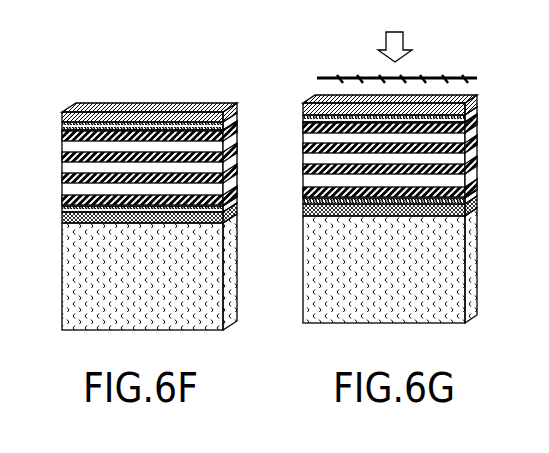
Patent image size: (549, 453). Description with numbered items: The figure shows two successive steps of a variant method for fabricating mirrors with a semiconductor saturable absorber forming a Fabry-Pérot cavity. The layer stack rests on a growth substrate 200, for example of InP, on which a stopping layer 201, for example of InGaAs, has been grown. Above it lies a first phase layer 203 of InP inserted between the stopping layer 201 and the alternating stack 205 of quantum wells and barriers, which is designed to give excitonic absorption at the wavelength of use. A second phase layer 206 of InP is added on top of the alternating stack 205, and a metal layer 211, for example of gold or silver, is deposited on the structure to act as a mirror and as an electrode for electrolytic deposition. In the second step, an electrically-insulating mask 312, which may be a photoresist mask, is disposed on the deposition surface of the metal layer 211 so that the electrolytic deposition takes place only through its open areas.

In FIG. 6F, the growth substrate 200 is at (60, 223).
In FIG. 6G, the growth substrate 200 is at (302, 216).
In FIG. 6F, the stopping layer 201 is at (237, 216).
In FIG. 6G, the stopping layer 201 is at (477, 211).
In FIG. 6F, the first phase layer 203 is at (62, 208).
In FIG. 6G, the first phase layer 203 is at (478, 203).
In FIG. 6F, the alternating stack of quantum wells and barriers 205 is at (238, 195).
In FIG. 6G, the alternating stack of quantum wells and barriers 205 is at (478, 190).
In FIG. 6F, the second phase layer 206 is at (238, 122).
In FIG. 6G, the second phase layer 206 is at (478, 117).
In FIG. 6F, the metal layer 211 is at (155, 109).
In FIG. 6G, the metal layer 211 is at (477, 100).
In FIG. 6G, the electrically-insulating mask 312 is at (477, 77).